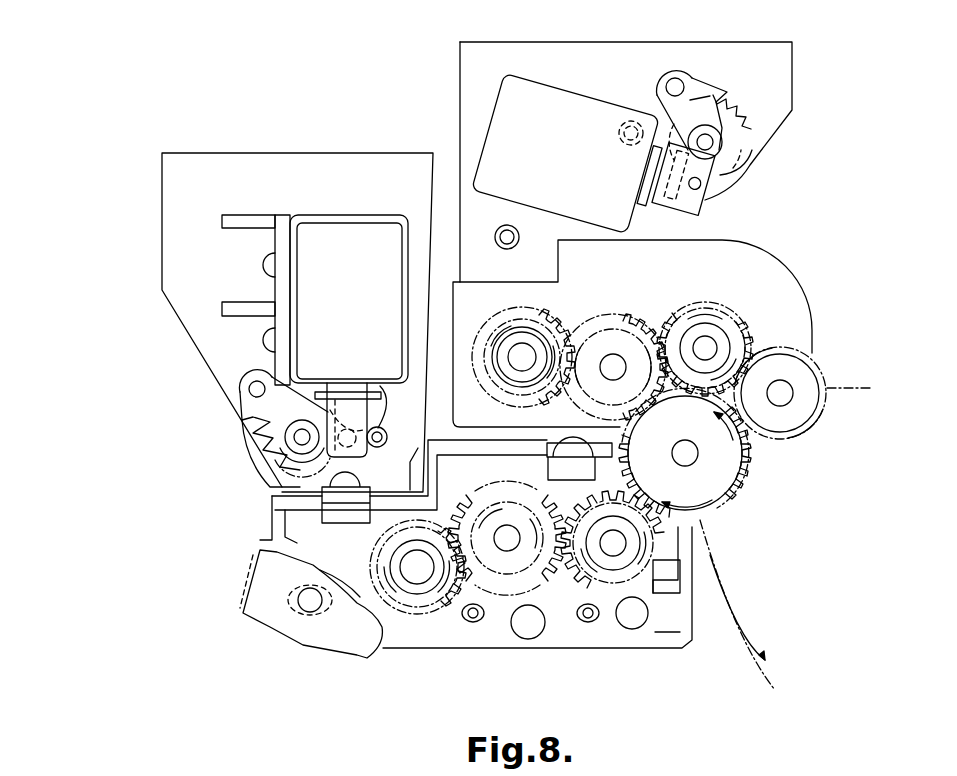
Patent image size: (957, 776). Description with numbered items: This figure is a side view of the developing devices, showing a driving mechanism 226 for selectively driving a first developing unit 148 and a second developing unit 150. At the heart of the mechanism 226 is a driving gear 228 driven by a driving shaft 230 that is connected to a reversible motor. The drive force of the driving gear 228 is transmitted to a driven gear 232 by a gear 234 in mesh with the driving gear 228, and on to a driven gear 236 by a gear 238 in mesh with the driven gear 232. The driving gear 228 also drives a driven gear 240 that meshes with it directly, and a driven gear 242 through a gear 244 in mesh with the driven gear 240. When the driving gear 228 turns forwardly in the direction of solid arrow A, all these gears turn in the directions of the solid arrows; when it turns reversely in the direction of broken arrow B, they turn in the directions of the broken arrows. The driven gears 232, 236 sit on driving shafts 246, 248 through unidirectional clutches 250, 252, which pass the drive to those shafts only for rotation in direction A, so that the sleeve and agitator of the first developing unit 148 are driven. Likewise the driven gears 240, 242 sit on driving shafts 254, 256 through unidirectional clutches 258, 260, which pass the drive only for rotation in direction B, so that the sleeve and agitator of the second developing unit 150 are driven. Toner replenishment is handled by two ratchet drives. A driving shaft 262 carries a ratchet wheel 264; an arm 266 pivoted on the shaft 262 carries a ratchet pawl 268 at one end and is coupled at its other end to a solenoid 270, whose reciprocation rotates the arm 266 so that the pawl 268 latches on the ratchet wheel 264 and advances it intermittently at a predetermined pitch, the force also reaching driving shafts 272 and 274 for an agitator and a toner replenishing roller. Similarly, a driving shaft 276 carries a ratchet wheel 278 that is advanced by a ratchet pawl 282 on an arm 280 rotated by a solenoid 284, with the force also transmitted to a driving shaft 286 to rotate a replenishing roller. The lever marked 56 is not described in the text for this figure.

The lever 56 is at (777, 690).
The first developing unit 148 is at (632, 60).
The second developing unit 150 is at (312, 523).
The driving mechanism 226 is at (548, 604).
The driving gear 228 is at (753, 446).
The driving shaft 230 is at (685, 452).
The driven gear 232 is at (742, 333).
The gear 234 is at (821, 378).
The driven gear 236 is at (517, 296).
The gear 238 is at (642, 320).
The driven gear 240 is at (668, 602).
The driven gear 242 is at (456, 617).
The gear 244 is at (502, 483).
The driving shaft 246 is at (713, 338).
The driving shaft 248 is at (523, 352).
The unidirectional clutch 250 is at (691, 334).
The unidirectional clutch 252 is at (511, 374).
The driving shaft 254 is at (612, 550).
The driving shaft 256 is at (417, 572).
The unidirectional clutch 258 is at (619, 556).
The unidirectional clutch 260 is at (426, 582).
The driving shaft 262 is at (714, 146).
The ratchet wheel 264 is at (733, 168).
The arm 266 is at (693, 96).
The ratchet pawl 268 is at (699, 80).
The solenoid 270 is at (540, 74).
The driving shaft 272 is at (618, 133).
The driving shaft 274 is at (508, 225).
The driving shaft 276 is at (294, 438).
The ratchet wheel 278 is at (278, 470).
The arm 280 is at (248, 390).
The ratchet pawl 282 is at (250, 418).
The solenoid 284 is at (360, 235).
The driving shaft 286 is at (384, 386).